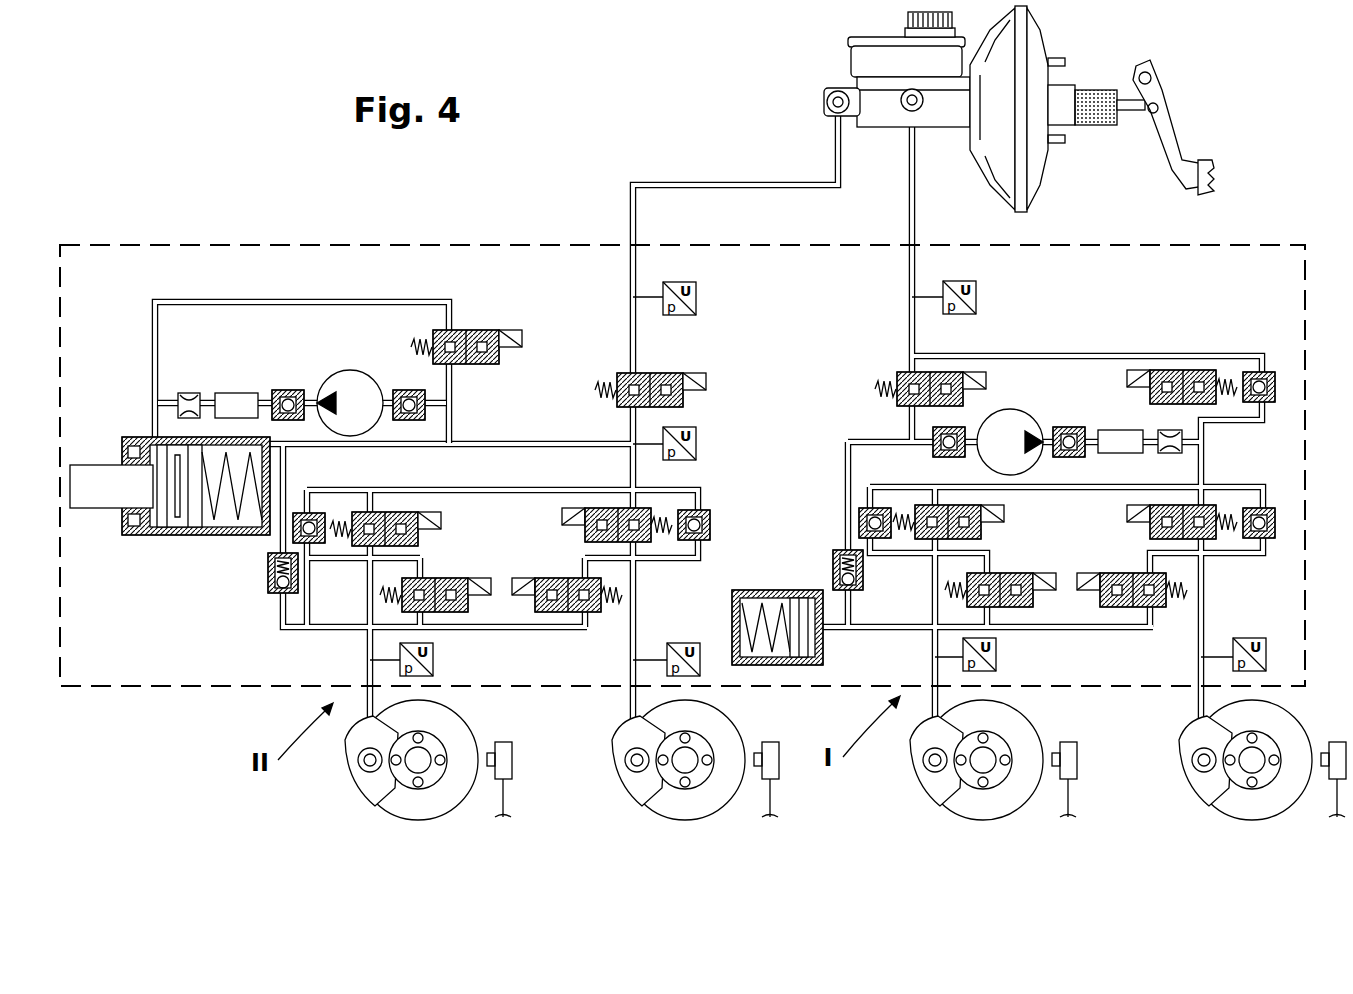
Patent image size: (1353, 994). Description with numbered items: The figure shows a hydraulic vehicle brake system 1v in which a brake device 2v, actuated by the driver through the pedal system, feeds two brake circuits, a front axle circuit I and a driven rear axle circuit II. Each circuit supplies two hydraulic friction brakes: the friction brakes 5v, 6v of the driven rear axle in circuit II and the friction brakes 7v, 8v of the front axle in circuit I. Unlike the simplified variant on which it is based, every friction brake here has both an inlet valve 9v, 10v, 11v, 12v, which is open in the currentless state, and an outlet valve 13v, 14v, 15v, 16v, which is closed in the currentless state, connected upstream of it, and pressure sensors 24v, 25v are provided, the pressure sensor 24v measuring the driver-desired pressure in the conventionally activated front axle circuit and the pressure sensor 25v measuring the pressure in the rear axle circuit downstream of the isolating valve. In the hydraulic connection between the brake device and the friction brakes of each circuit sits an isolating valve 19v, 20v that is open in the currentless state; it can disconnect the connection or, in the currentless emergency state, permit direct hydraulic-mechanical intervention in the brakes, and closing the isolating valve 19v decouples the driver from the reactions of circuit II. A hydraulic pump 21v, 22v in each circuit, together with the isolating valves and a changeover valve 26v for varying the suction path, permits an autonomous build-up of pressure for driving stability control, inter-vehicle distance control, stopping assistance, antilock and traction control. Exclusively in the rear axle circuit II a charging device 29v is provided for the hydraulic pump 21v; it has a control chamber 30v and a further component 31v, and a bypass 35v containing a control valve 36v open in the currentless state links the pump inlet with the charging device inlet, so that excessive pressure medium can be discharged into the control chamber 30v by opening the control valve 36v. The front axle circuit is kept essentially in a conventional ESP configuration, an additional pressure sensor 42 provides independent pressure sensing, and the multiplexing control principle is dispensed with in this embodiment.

The hydraulic vehicle brake system 1v is at (165, 182).
The brake device 2v is at (828, 50).
The hydraulic friction brake 5v is at (375, 785).
The hydraulic friction brake 6v is at (640, 785).
The hydraulic friction brake 7v is at (937, 782).
The hydraulic friction brake 8v is at (1207, 782).
The inlet valve 9v is at (360, 546).
The inlet valve 10v is at (645, 545).
The inlet valve 11v is at (985, 527).
The inlet valve 12v is at (1150, 528).
The outlet valve 13v is at (447, 578).
The outlet valve 14v is at (560, 578).
The outlet valve 15v is at (1000, 606).
The outlet valve 16v is at (1157, 606).
The isolating valve 19v is at (657, 373).
The isolating valve 20v is at (902, 406).
The hydraulic pump 21v is at (343, 387).
The hydraulic pump 22v is at (1018, 459).
The pressure sensor 24v is at (977, 297).
The pressure sensor 25v is at (697, 444).
The changeover valve 26v is at (1150, 395).
The charging device 29v is at (170, 542).
The control chamber 30v is at (150, 537).
The accumulator spring 31v is at (237, 520).
The bypass 35v is at (382, 321).
The control valve 36v is at (503, 348).
The pressure sensor 42 is at (697, 297).